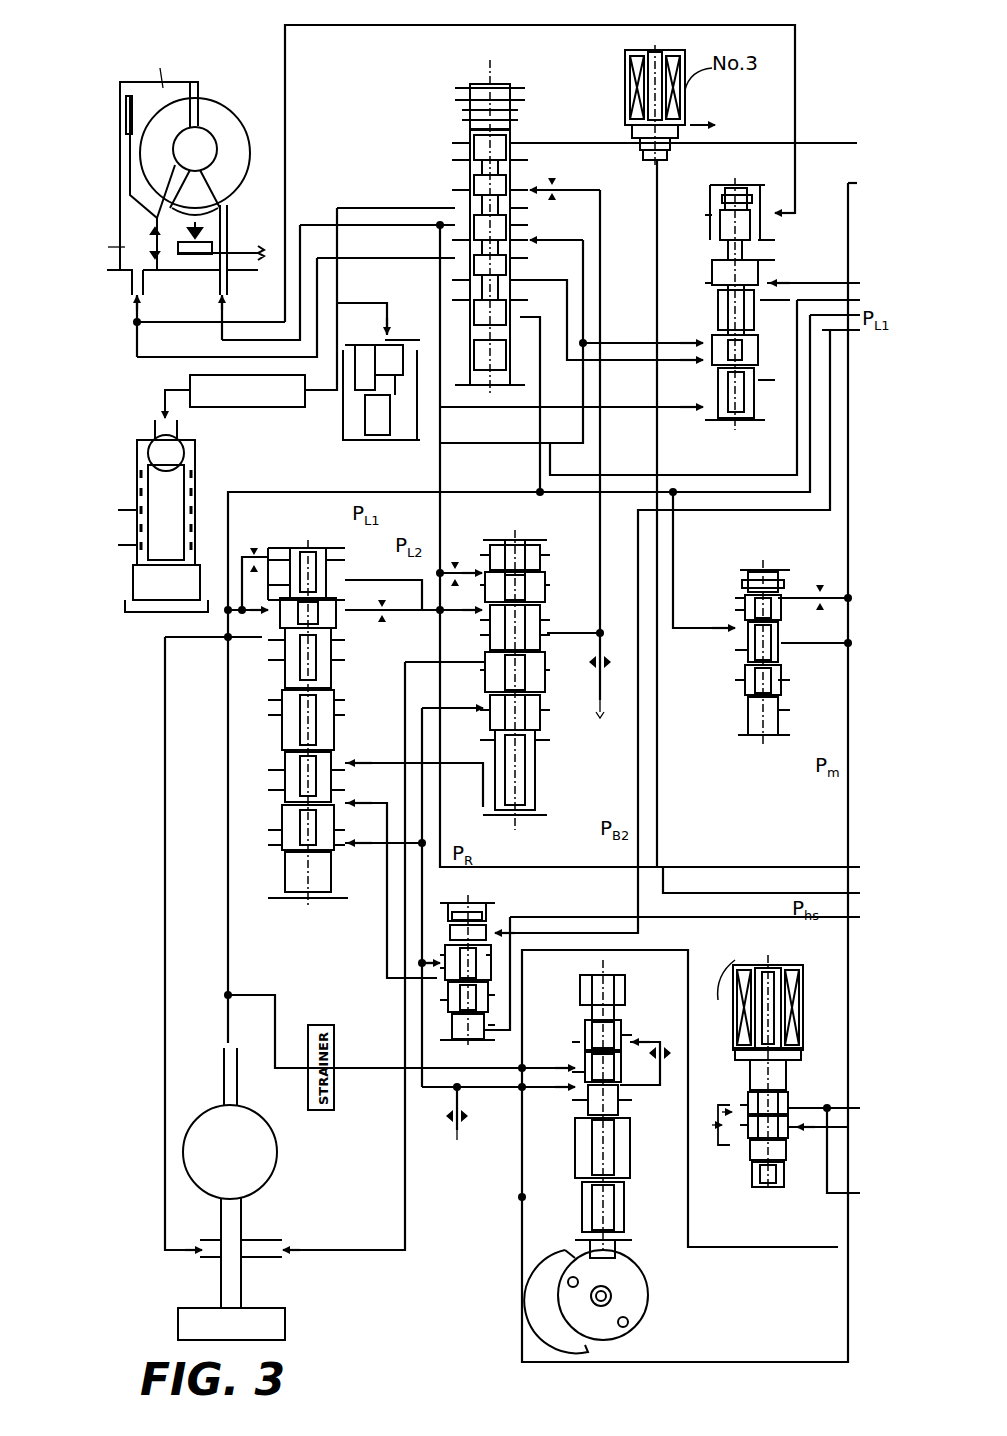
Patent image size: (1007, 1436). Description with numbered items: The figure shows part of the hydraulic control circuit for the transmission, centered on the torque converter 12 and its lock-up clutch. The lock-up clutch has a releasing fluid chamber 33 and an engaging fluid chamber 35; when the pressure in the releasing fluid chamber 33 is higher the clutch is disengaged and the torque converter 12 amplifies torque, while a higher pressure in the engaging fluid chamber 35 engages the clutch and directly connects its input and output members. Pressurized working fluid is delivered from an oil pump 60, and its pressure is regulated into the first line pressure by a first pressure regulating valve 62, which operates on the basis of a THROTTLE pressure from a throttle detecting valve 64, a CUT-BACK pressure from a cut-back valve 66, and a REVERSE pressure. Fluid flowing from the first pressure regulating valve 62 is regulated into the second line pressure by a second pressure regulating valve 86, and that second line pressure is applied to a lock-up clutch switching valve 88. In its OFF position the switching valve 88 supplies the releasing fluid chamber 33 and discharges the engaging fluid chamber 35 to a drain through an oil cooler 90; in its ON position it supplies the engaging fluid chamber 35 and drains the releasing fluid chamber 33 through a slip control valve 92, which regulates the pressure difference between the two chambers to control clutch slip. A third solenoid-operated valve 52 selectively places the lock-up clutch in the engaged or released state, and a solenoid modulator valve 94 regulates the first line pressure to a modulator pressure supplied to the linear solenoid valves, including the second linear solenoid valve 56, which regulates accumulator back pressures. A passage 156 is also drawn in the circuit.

The torque converter 12 is at (201, 65).
The engaging fluid chamber 35 is at (156, 63).
The releasing fluid chamber 33 is at (100, 249).
The lock-up clutch switching valve 88 is at (445, 72).
The third solenoid-operated valve 52 is at (622, 57).
The slip control valve 92 is at (705, 230).
The oil cooler 90 is at (272, 407).
The first pressure regulating valve 62 is at (305, 905).
The second pressure regulating valve 86 is at (545, 740).
The solenoid modulator valve 94 is at (733, 748).
The oil passage 156 is at (712, 917).
The cut-back valve 66 is at (500, 903).
The oil pump 60 is at (262, 1170).
The throttle detecting valve 64 is at (660, 1296).
The second linear solenoid valve 56 is at (768, 1195).